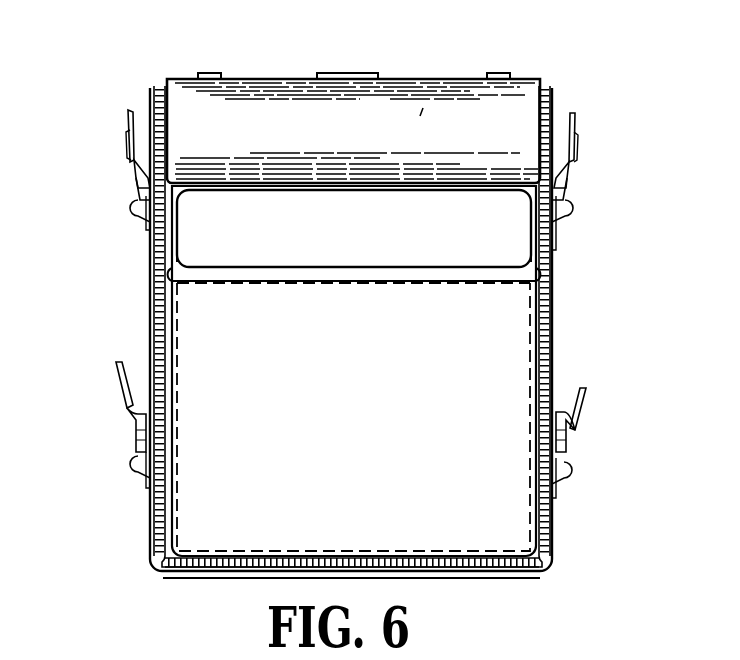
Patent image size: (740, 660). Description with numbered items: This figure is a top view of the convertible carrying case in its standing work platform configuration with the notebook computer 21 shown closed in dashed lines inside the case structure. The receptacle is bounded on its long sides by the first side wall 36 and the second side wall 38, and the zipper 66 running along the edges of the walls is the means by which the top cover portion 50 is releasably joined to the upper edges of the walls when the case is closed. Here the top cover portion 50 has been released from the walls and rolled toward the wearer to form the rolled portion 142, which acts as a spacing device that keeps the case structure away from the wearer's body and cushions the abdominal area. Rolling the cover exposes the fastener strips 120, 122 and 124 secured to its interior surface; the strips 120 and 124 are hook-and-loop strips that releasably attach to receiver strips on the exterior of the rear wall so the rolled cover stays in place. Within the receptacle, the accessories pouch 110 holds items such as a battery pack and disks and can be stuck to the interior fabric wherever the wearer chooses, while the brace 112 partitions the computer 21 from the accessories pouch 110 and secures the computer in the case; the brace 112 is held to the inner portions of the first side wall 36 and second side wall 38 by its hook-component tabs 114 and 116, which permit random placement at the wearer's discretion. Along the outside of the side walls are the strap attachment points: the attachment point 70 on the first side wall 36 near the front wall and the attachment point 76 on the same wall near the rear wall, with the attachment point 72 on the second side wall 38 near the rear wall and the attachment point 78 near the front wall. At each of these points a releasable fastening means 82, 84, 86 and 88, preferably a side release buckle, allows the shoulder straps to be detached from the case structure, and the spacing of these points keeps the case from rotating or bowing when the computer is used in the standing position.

The notebook computer 21 is at (386, 362).
The first side wall 36 is at (553, 330).
The second side wall 38 is at (150, 313).
The top cover portion 50 is at (262, 143).
The zipper 66 is at (541, 562).
The attachment point 70 is at (560, 486).
The attachment point 72 is at (146, 226).
The attachment point 76 is at (565, 222).
The attachment point 78 is at (140, 480).
The releasable fastening means 82 is at (568, 436).
The releasable fastening means 84 is at (135, 180).
The releasable fastening means 86 is at (568, 180).
The releasable fastening means 88 is at (136, 432).
The accessories pouch 110 is at (367, 243).
The brace 112 is at (410, 275).
The tab 114 is at (528, 250).
The tab 116 is at (177, 252).
The fastener strip 120 is at (212, 73).
The fastener strip 122 is at (348, 75).
The fastener strip 124 is at (503, 74).
The rolled portion 142 is at (420, 116).